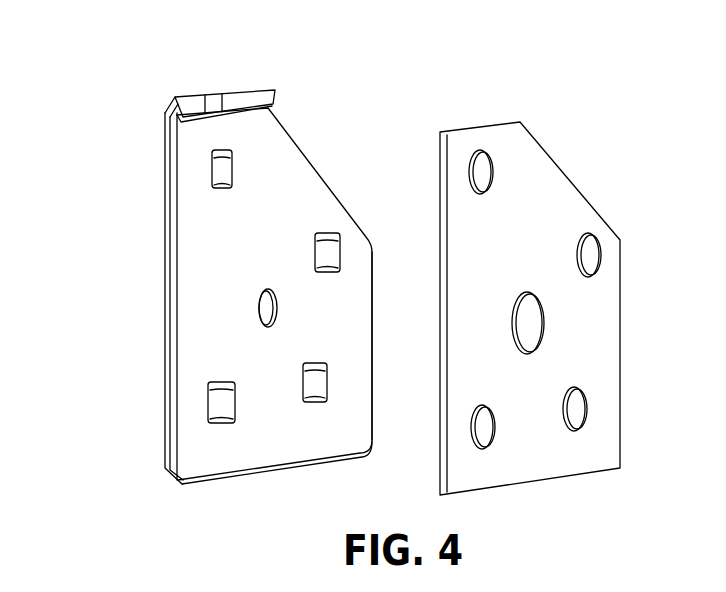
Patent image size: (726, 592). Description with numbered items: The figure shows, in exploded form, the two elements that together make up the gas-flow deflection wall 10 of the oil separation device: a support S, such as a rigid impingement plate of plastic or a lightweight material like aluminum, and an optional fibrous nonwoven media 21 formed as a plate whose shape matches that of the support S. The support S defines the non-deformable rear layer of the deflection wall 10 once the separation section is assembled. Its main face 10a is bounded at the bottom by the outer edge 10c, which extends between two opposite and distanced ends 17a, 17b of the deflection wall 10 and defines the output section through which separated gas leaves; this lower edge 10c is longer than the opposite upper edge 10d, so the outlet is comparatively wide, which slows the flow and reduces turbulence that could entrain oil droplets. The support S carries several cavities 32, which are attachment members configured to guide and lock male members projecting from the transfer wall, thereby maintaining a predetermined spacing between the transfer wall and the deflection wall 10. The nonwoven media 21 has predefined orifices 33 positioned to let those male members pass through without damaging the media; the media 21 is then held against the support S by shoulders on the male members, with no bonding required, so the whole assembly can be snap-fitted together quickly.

The support S is at (138, 185).
The gas-flow deflection wall 10 is at (523, 68).
The main plate of bracket 10a is at (202, 290).
The outer edge of the deflection wall 10c is at (250, 473).
The upper edge of the deflection wall 10d is at (222, 92).
The end of the deflection wall 17a is at (165, 365).
The end of the deflection wall 17b is at (372, 343).
The fibrous nonwoven media 21 is at (592, 175).
The cavities 32 is at (222, 168).
The predefined orifices 33 is at (493, 170).